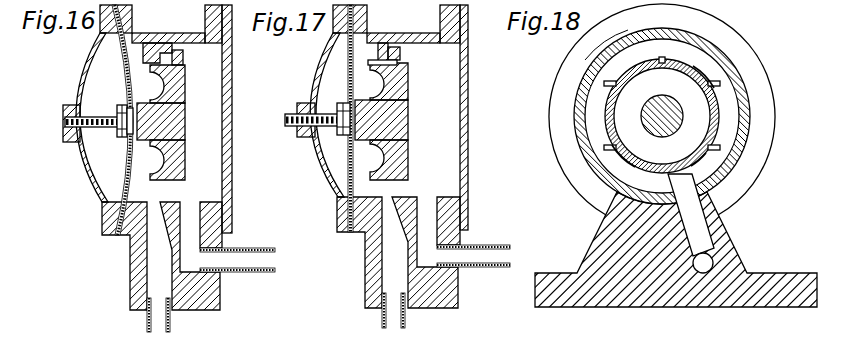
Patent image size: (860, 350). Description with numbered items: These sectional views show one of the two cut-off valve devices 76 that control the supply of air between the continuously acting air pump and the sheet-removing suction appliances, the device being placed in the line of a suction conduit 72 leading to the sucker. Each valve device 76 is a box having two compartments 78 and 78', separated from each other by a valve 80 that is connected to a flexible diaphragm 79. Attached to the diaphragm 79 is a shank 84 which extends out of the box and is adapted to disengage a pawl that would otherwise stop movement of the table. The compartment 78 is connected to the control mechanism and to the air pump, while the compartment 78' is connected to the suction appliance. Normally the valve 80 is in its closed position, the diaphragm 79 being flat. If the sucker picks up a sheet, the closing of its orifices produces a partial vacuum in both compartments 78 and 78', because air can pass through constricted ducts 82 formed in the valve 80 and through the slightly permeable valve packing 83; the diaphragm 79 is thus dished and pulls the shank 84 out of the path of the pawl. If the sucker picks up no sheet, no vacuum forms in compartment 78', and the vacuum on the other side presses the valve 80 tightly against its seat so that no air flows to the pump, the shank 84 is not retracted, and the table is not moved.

In FIG. 16, the suction conduit 72 is at (254, 250).
In FIG. 17, the suction conduit 72 is at (497, 246).
In FIG. 18, the suction conduit 72 is at (714, 258).
In FIG. 16, the cut off valve 76 is at (182, 33).
In FIG. 17, the cut off valve 76 is at (417, 33).
In FIG. 18, the cut off valve 76 is at (675, 157).
In FIG. 16, the compartment 78 is at (100, 119).
In FIG. 17, the compartment 78 is at (330, 116).
In FIG. 16, the compartment 78' is at (238, 119).
In FIG. 17, the compartment 78' is at (371, 117).
In FIG. 18, the compartment 78' is at (689, 117).
In FIG. 16, the flexible diaphragm 79 is at (128, 90).
In FIG. 17, the flexible diaphragm 79 is at (350, 72).
In FIG. 16, the valve 80 is at (160, 120).
In FIG. 17, the valve 80 is at (387, 118).
In FIG. 18, the valve 80 is at (695, 77).
In FIG. 16, the constricted duct 82 is at (186, 74).
In FIG. 17, the constricted duct 82 is at (405, 72).
In FIG. 18, the constricted duct 82 is at (662, 60).
In FIG. 16, the valve packing 83 is at (183, 53).
In FIG. 17, the valve packing 83 is at (402, 53).
In FIG. 16, the shank 84 is at (110, 124).
In FIG. 17, the shank 84 is at (297, 116).